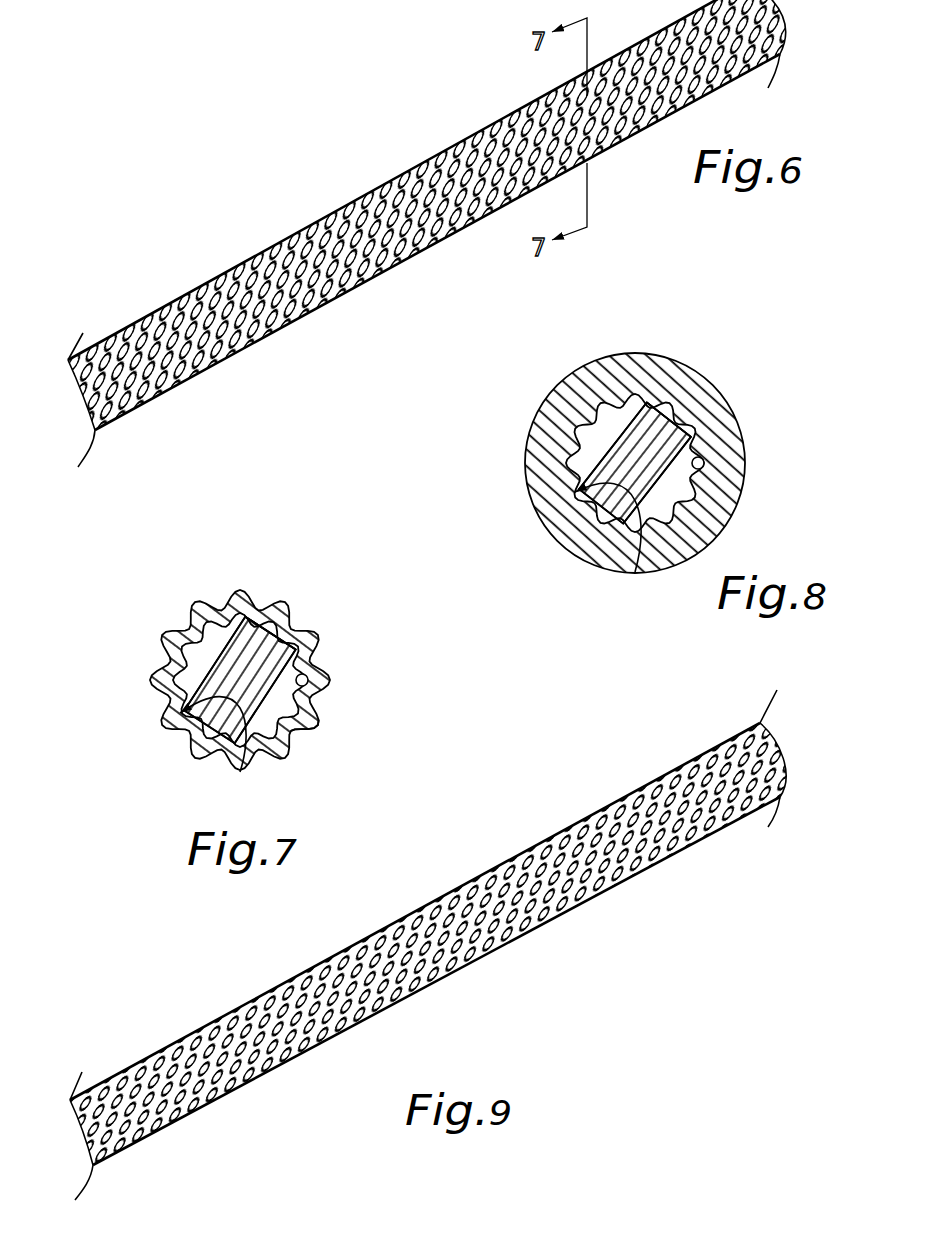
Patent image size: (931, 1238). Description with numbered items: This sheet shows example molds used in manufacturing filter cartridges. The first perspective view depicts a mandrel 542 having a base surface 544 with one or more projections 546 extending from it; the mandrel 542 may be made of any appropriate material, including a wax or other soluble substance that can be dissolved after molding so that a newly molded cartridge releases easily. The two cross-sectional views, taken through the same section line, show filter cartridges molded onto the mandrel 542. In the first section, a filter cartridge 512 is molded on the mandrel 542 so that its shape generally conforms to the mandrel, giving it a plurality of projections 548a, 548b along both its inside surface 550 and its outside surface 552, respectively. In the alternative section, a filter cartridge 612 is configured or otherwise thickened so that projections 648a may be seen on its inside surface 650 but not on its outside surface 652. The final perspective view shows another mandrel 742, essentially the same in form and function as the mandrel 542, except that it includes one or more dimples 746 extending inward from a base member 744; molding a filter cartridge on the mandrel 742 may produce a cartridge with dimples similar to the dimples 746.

In FIG. 6, the mandrel 542 is at (285, 148).
In FIG. 8, the mandrel 542 is at (577, 447).
In FIG. 7, the mandrel 542 is at (195, 668).
In FIG. 6, the base surface 544 is at (237, 268).
In FIG. 8, the base surface 544 is at (650, 400).
In FIG. 7, the base surface 544 is at (260, 613).
In FIG. 6, the projections 546 is at (488, 127).
In FIG. 8, the projections 546 is at (672, 405).
In FIG. 7, the projections 546 is at (275, 627).
In FIG. 7, the filter cartridge 512 is at (197, 608).
In FIG. 7, the projections 548a is at (243, 768).
In FIG. 7, the projections 548b is at (147, 730).
In FIG. 7, the inside surface 550 is at (303, 674).
In FIG. 7, the outside surface 552 is at (322, 700).
In FIG. 8, the filter cartridge 612 is at (588, 383).
In FIG. 8, the projections 648a is at (634, 572).
In FIG. 8, the inside surface 650 is at (700, 457).
In FIG. 8, the outside surface 652 is at (732, 510).
In FIG. 9, the mandrel 742 is at (205, 992).
In FIG. 9, the base member 744 is at (523, 857).
In FIG. 9, the dimples 746 is at (575, 840).